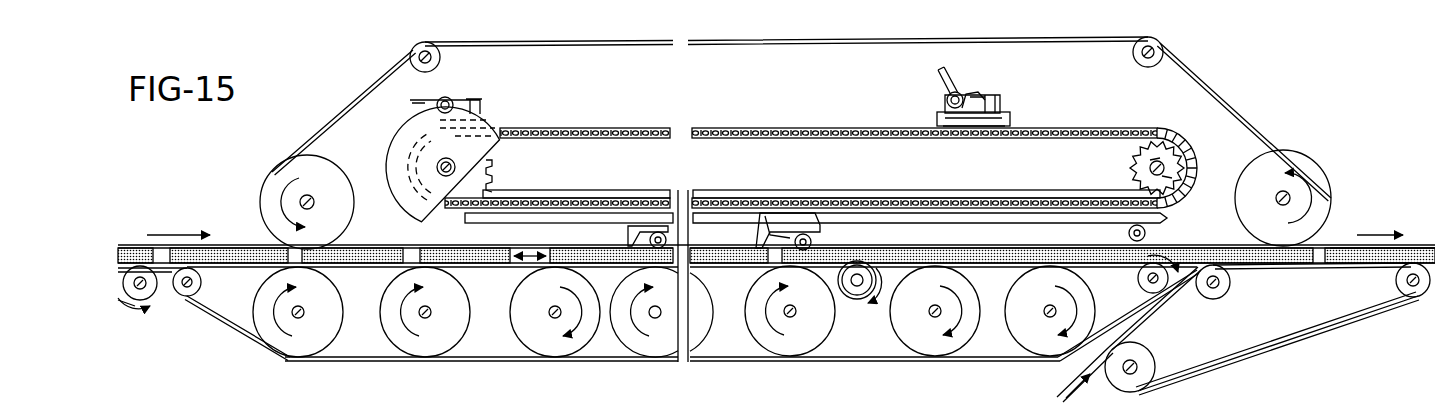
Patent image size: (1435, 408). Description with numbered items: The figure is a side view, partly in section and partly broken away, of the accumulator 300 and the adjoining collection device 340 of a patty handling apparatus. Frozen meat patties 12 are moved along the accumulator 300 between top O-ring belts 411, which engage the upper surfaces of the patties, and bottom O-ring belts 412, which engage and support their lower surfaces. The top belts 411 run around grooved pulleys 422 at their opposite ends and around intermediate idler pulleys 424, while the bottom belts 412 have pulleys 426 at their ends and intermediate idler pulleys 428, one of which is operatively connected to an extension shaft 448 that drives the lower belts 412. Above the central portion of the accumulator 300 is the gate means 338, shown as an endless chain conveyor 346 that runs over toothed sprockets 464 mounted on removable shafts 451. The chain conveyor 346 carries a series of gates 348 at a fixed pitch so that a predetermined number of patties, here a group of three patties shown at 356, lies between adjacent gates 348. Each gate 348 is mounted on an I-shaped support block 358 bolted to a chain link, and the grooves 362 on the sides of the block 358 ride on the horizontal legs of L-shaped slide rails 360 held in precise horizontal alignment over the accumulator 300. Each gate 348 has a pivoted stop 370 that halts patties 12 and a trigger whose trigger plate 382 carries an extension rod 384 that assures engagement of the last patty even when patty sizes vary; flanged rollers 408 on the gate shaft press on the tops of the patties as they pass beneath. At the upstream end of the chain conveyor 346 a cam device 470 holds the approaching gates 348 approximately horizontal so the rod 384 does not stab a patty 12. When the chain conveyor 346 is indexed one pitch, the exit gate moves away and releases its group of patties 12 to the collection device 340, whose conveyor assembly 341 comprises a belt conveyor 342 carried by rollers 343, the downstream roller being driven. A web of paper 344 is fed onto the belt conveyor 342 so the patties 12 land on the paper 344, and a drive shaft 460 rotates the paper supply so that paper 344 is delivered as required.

The accumulator 300 is at (318, 110).
The patties 12 is at (223, 248).
The gate means 338 is at (840, 85).
The collection device 340 is at (1374, 208).
The conveyor assembly 341 is at (1290, 355).
The belt conveyor 342 is at (1295, 336).
The rollers 343 is at (1396, 281).
The web of paper 344 is at (1057, 384).
The endless chain conveyor 346 is at (712, 128).
The gates 348 is at (482, 97).
The predetermined number of patties 356 is at (1025, 200).
The support block 358 is at (1005, 115).
The slide rails 360 is at (704, 188).
The grooves 362 is at (976, 127).
The stop 370 is at (768, 247).
The trigger plate 382 is at (958, 108).
The extension rod 384 is at (940, 70).
The flanged roller 408 is at (945, 98).
The top O-ring belts 411 is at (402, 250).
The bottom O-ring belts 412 is at (490, 355).
The grooved pulleys 422 is at (287, 168).
The idler pulleys 424 is at (412, 60).
The pulleys 426 is at (185, 298).
The intermediate idler pulleys 428 is at (397, 340).
The extension shaft 448 is at (555, 318).
The shaft 451 is at (1165, 160).
The drive shaft 460 is at (1230, 281).
The toothed sprockets 464 is at (490, 168).
The cam device 470 is at (390, 148).